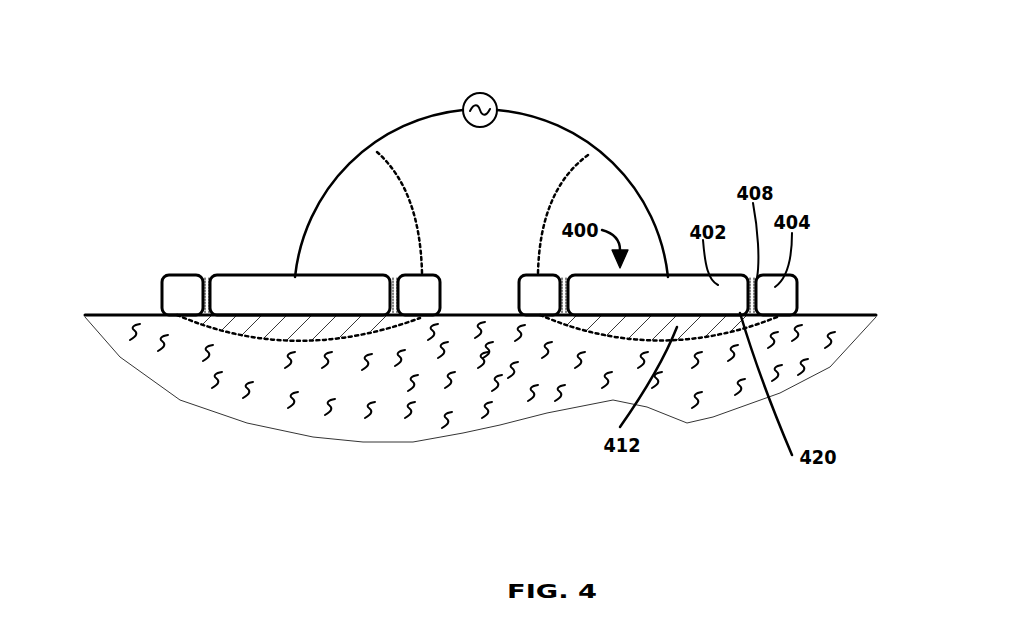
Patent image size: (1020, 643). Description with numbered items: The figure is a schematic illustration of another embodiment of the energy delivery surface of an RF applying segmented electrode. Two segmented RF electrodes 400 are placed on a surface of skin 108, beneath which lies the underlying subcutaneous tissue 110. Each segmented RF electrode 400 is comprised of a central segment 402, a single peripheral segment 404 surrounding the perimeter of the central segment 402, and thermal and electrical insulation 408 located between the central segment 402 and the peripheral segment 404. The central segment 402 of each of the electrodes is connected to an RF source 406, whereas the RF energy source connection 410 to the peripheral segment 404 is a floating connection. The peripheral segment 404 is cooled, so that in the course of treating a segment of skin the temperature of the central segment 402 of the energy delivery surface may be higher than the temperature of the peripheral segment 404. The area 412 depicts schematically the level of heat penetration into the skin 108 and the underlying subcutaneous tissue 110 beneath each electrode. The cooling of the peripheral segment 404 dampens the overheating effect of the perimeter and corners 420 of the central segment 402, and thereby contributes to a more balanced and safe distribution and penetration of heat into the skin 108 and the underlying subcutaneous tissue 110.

The skin 108 is at (110, 313).
The underlying subcutaneous tissue 110 is at (378, 427).
The segmented RF electrode 400 is at (287, 249).
The central segment 402 is at (272, 280).
The peripheral segment 404 is at (173, 293).
The RF source 406 is at (497, 102).
The thermal and electrical insulation 408 is at (213, 280).
The RF energy source connection 410 is at (556, 190).
The area of heat penetration 412 is at (257, 328).
The perimeter and corners of central segment 420 is at (392, 313).